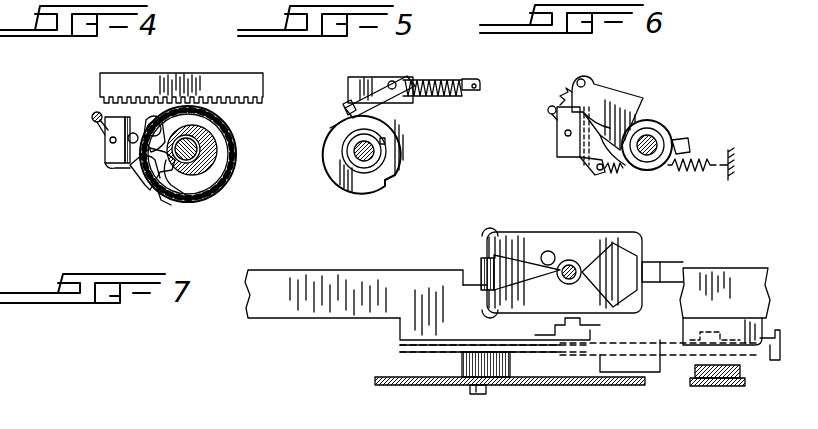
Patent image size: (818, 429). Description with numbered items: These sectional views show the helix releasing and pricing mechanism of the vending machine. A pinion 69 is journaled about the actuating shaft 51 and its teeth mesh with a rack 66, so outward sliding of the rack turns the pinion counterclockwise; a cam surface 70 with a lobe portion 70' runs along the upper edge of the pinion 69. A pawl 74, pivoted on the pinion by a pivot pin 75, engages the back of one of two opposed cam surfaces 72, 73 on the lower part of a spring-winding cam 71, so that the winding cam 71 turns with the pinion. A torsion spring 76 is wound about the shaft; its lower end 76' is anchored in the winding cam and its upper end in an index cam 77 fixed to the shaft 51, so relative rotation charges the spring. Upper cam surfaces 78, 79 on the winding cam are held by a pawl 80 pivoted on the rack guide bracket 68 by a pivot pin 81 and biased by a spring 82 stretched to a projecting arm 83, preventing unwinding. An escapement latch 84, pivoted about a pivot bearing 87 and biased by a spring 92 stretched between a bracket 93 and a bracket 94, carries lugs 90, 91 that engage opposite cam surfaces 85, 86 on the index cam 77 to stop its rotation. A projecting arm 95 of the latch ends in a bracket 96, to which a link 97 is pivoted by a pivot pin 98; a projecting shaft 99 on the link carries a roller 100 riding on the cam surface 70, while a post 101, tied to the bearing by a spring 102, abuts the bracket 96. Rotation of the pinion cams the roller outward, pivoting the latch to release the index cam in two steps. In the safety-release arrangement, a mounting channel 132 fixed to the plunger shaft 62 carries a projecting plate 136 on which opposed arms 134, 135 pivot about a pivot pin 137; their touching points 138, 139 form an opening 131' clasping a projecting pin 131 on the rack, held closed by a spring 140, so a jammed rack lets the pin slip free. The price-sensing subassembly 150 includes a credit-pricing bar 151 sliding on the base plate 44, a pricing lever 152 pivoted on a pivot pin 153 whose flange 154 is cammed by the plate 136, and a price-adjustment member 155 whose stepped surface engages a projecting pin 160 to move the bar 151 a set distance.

In FIG. 7, the base plate 44 is at (398, 374).
In FIG. 4, the actuating shaft 51 is at (226, 180).
In FIG. 5, the actuating shaft 51 is at (362, 163).
In FIG. 6, the actuating shaft 51 is at (660, 145).
In FIG. 7, the plunger shaft 62 is at (290, 305).
In FIG. 4, the rack 66 is at (232, 78).
In FIG. 5, the rack guide bracket 68 is at (362, 80).
In FIG. 4, the pinion 69 is at (158, 182).
In FIG. 4, the cam surface 70 is at (201, 198).
In FIG. 4, the lobe portion 70' is at (158, 211).
In FIG. 5, the spring-winding cam 71 is at (405, 137).
In FIG. 4, the cam surface 72 is at (210, 130).
In FIG. 4, the cam surface 73 is at (193, 197).
In FIG. 4, the pawl 74 is at (163, 158).
In FIG. 4, the pivot pin 75 is at (153, 127).
In FIG. 5, the torsion spring 76 is at (396, 133).
In FIG. 5, the lower end of spring 76' is at (415, 145).
In FIG. 6, the index cam 77 is at (672, 125).
In FIG. 5, the cam surface 78 is at (337, 135).
In FIG. 5, the cam surface 79 is at (405, 167).
In FIG. 5, the pawl 80 is at (348, 103).
In FIG. 5, the pivot pin 81 is at (403, 82).
In FIG. 5, the spring 82 is at (447, 78).
In FIG. 5, the projecting arm 83 is at (478, 78).
In FIG. 6, the escapement latch 84 is at (624, 95).
In FIG. 6, the cam surface 85 is at (632, 126).
In FIG. 6, the cam surface 86 is at (690, 145).
In FIG. 6, the pivot bearing 87 is at (585, 82).
In FIG. 6, the lug 90 is at (650, 100).
In FIG. 6, the lug 91 is at (585, 157).
In FIG. 6, the spring 92 is at (682, 168).
In FIG. 6, the bracket 93 is at (596, 167).
In FIG. 6, the bracket 94 is at (733, 168).
In FIG. 4, the projecting arm 95 is at (120, 117).
In FIG. 6, the projecting arm 95 is at (560, 151).
In FIG. 4, the bracket 96 is at (128, 140).
In FIG. 4, the link 97 is at (98, 127).
In FIG. 6, the link 97 is at (556, 118).
In FIG. 4, the pivot pin 98 is at (107, 150).
In FIG. 6, the pivot pin 98 is at (565, 135).
In FIG. 4, the projecting shaft 99 is at (110, 136).
In FIG. 4, the roller 100 is at (118, 167).
In FIG. 4, the post 101 is at (92, 117).
In FIG. 6, the post 101 is at (548, 112).
In FIG. 6, the spring 102 is at (563, 96).
In FIG. 7, the projecting pin 131 is at (596, 246).
In FIG. 7, the opening 131' is at (609, 275).
In FIG. 7, the mounting channel 132 is at (664, 263).
In FIG. 7, the arm 134 is at (525, 250).
In FIG. 7, the arm 135 is at (490, 292).
In FIG. 7, the projecting plate 136 is at (425, 305).
In FIG. 7, the pivot pin 137 is at (656, 262).
In FIG. 7, the point 138 is at (553, 255).
In FIG. 7, the point 139 is at (560, 275).
In FIG. 7, the spring 140 is at (483, 272).
In FIG. 7, the price-sensing subassembly 150 is at (476, 393).
In FIG. 7, the credit-pricing bar 151 is at (708, 378).
In FIG. 7, the pricing lever 152 is at (470, 358).
In FIG. 7, the pivot pin 153 is at (484, 388).
In FIG. 7, the flange 154 is at (720, 335).
In FIG. 7, the price-adjustment member 155 is at (408, 349).
In FIG. 7, the projecting pin 160 is at (708, 330).